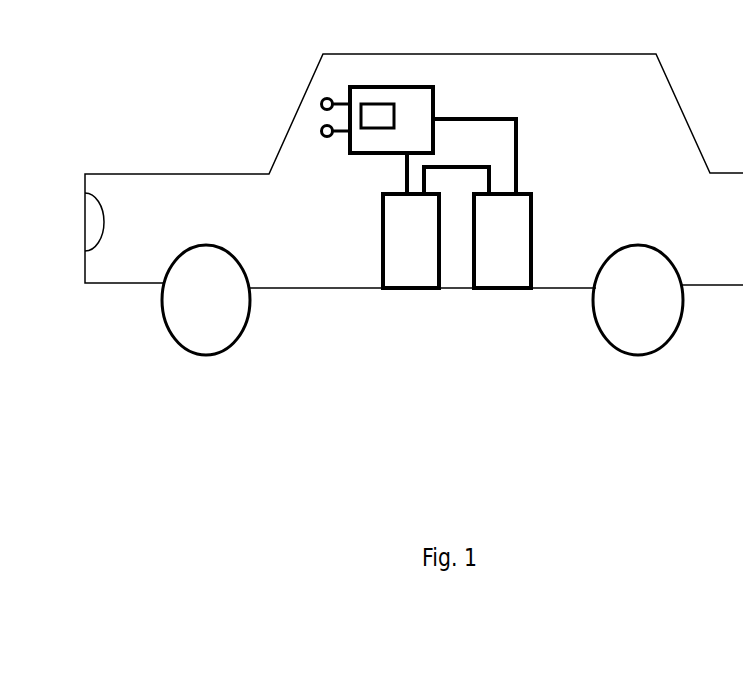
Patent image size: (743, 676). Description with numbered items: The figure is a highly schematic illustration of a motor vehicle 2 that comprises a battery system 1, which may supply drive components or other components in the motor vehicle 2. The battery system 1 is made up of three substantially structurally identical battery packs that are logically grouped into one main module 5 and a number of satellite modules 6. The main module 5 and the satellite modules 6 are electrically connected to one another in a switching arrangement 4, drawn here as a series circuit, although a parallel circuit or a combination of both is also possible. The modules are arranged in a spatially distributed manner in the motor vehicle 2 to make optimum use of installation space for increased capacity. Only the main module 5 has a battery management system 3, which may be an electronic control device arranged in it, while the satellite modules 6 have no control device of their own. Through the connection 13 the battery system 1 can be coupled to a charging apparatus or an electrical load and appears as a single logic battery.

The battery system 1 is at (384, 204).
The motor vehicle 2 is at (85, 271).
The battery management system 3 is at (378, 104).
The switching arrangement 4 is at (518, 131).
The main module 5 is at (435, 103).
The satellite modules 6 is at (532, 227).
The connection 13 is at (328, 117).